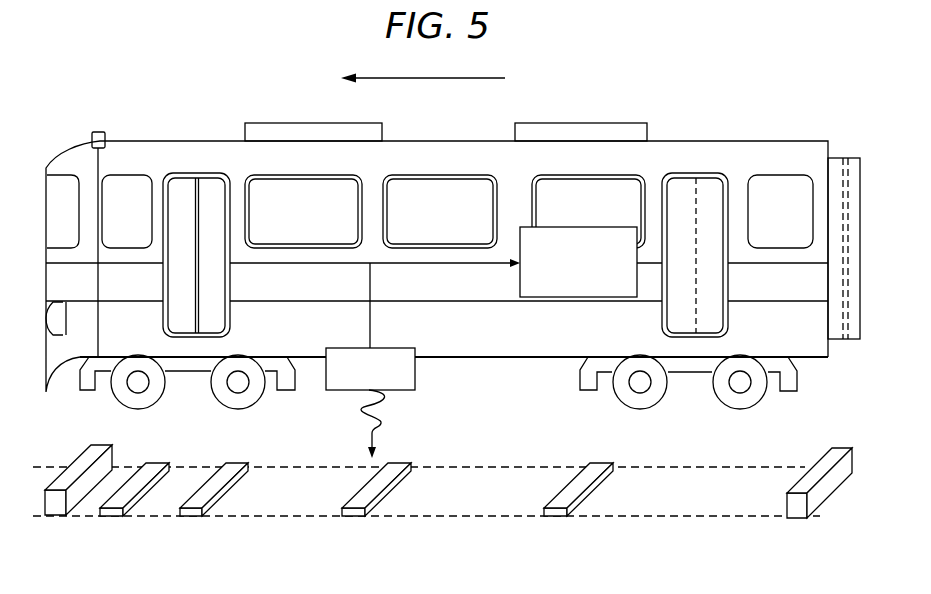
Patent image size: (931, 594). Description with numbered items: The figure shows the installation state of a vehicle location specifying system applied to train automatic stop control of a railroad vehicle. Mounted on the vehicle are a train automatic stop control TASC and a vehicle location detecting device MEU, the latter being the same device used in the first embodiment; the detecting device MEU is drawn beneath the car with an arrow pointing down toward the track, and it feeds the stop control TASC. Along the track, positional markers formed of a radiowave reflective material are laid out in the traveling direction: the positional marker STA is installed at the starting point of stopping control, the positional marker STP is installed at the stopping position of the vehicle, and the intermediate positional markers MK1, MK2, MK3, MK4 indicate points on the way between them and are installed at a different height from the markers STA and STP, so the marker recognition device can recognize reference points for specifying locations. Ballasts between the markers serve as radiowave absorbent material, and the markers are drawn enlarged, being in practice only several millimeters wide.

The train automatic stop control TASC is at (503, 262).
The vehicle location detecting device MEU is at (370, 360).
The positional marker STP is at (56, 518).
The positional marker MK4 is at (113, 518).
The positional marker MK3 is at (192, 518).
The positional marker MK2 is at (353, 518).
The positional marker MK1 is at (556, 518).
The positional marker STA is at (800, 520).